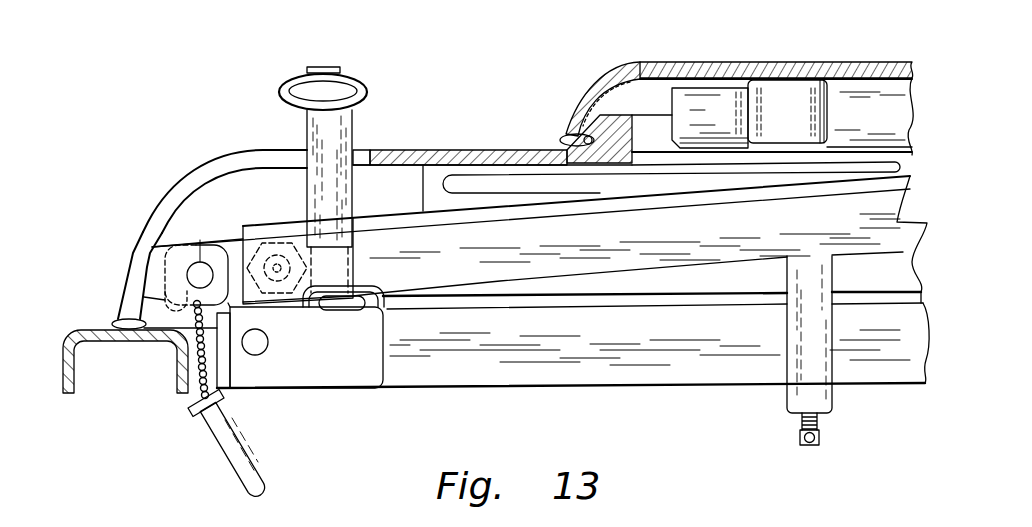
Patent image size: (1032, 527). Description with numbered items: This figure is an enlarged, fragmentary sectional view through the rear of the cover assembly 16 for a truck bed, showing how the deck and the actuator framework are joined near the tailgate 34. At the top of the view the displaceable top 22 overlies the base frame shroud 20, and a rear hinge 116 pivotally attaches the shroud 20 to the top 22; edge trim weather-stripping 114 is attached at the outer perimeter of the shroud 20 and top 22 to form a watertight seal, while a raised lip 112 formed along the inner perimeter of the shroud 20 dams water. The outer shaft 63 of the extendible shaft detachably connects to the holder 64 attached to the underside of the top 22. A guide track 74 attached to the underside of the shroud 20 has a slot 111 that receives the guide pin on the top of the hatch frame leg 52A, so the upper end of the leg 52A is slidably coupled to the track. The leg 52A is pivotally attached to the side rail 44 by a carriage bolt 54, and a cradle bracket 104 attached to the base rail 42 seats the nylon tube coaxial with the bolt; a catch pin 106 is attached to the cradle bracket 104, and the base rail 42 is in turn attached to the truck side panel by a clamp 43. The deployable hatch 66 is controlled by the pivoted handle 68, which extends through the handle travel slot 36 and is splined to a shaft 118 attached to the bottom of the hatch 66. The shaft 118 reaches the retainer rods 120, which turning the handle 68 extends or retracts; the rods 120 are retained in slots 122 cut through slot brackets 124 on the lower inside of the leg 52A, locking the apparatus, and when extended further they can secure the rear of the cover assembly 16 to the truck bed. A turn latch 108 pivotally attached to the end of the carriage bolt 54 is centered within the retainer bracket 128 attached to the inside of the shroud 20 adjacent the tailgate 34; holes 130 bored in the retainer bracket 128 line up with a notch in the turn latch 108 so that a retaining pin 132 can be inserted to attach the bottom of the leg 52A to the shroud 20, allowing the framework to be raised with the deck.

The cover assembly 16 is at (530, 56).
The base frame shroud 20 is at (402, 148).
The displaceable top 22 is at (884, 63).
The tailgate 34 is at (77, 341).
The handle travel slot 36 is at (203, 160).
The base rail 42 is at (670, 368).
The clamp 43 is at (832, 398).
The side rail 44 is at (702, 280).
The leg 52A is at (565, 258).
The carriage bolt 54 is at (257, 221).
The outer shaft 63 is at (717, 100).
The holder 64 is at (784, 95).
The hatch 66 is at (270, 222).
The handle 68 is at (288, 72).
The guide track 74 is at (467, 173).
The cradle bracket 104 is at (352, 370).
The catch pin 106 is at (255, 348).
The turn latch 108 is at (222, 240).
The slot 111 is at (567, 200).
The raised lip 112 is at (619, 185).
The edge trim weather-stripping 114 is at (567, 138).
The rear hinge 116 is at (590, 110).
The shaft 118 is at (306, 135).
The retainer rod 120 is at (344, 313).
The slot 122 is at (370, 280).
The slot bracket 124 is at (353, 322).
The retainer bracket 128 is at (130, 257).
The hole 130 is at (197, 247).
The retaining pin 132 is at (230, 450).